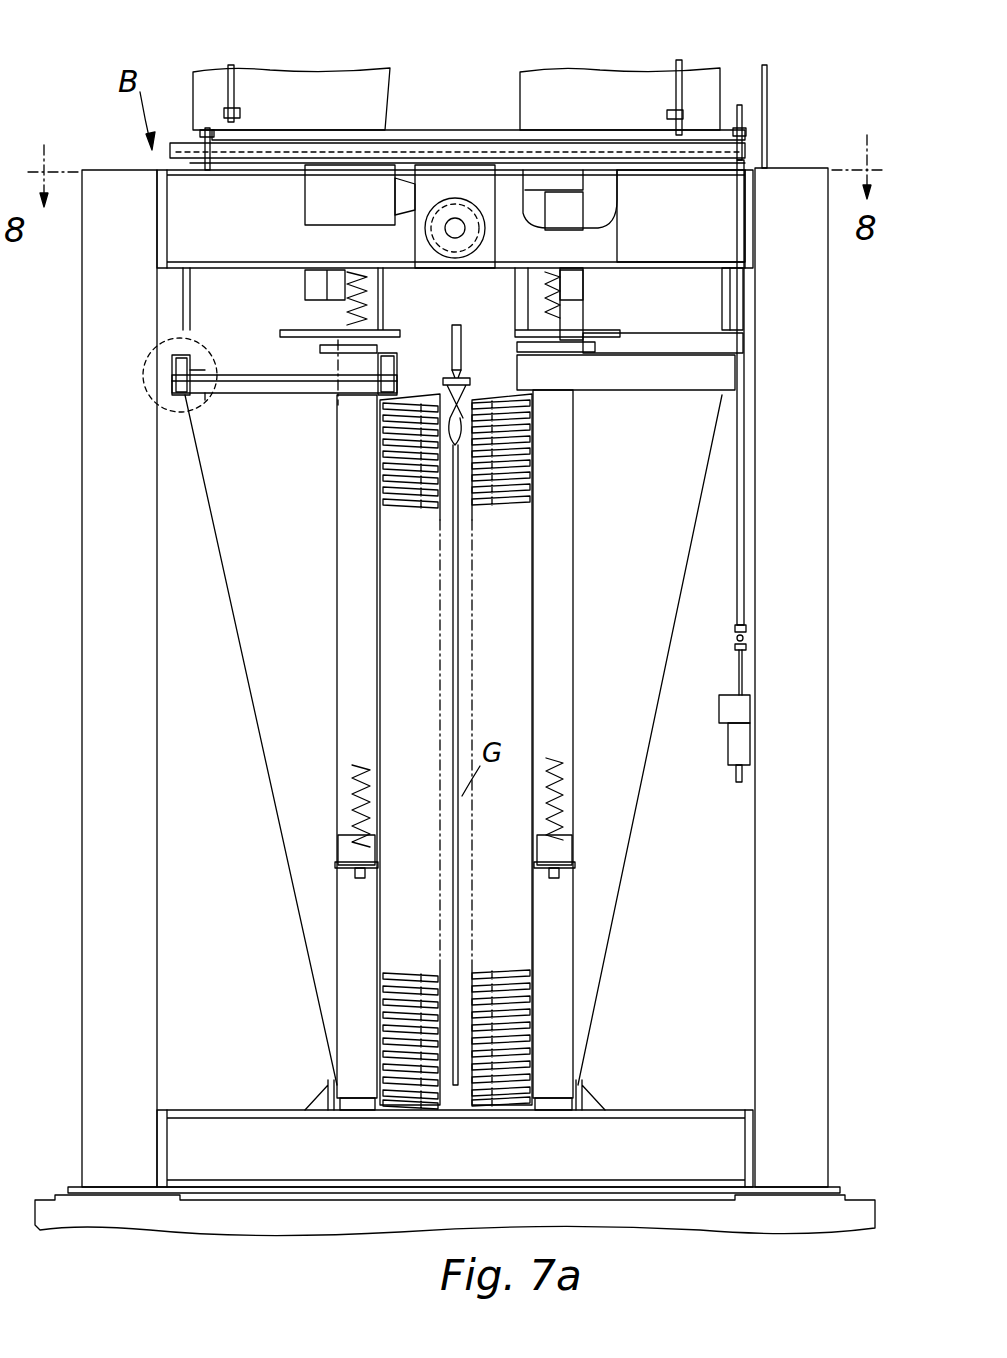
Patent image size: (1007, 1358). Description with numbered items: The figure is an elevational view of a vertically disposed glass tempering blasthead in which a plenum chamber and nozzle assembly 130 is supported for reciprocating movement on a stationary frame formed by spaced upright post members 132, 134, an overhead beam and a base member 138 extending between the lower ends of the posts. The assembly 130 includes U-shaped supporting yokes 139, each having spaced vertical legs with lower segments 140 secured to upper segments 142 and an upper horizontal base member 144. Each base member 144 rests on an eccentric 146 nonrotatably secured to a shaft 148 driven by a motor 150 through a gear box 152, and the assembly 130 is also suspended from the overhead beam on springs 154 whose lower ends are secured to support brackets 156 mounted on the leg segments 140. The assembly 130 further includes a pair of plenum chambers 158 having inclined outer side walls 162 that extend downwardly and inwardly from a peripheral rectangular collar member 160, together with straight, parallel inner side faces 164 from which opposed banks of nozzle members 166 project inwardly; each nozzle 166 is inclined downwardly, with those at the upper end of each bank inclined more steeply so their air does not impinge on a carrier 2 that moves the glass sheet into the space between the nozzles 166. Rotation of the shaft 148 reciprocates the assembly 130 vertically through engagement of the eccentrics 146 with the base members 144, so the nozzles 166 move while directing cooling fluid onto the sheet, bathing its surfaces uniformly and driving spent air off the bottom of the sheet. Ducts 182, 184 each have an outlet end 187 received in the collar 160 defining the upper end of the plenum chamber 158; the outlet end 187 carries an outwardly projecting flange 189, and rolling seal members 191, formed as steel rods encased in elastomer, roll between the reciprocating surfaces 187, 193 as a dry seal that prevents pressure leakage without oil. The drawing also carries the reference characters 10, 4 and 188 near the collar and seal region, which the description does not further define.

The carrier 2 is at (462, 340).
The handle 4 is at (462, 405).
The bearing assembly 10 is at (165, 408).
The plenum chamber and nozzle assembly 130 is at (705, 548).
The upright post member 132 is at (808, 742).
The upright post member 134 is at (135, 946).
The base member 138 is at (232, 1108).
The yoke 139 is at (603, 206).
The lower segment 140 is at (357, 632).
The upper segment 142 is at (577, 312).
The base member 144 is at (553, 178).
The eccentric 146 is at (488, 244).
The shaft 148 is at (455, 220).
The motor 150 is at (320, 208).
The gear box 152 is at (488, 172).
The spring 154 is at (352, 775).
The support bracket 156 is at (372, 868).
The plenum chamber 158 is at (272, 688).
The collar member 160 is at (175, 388).
The inclined outer side wall 162 is at (640, 805).
The inner side face 164 is at (385, 505).
The nozzle member 166 is at (520, 452).
The duct 182 is at (364, 90).
The duct 184 is at (708, 83).
The outlet end 187 is at (190, 352).
The bracket 188 is at (735, 343).
The flange 189 is at (215, 392).
The rolling seal member 191 is at (195, 378).
The reciprocating surface 193 is at (185, 365).